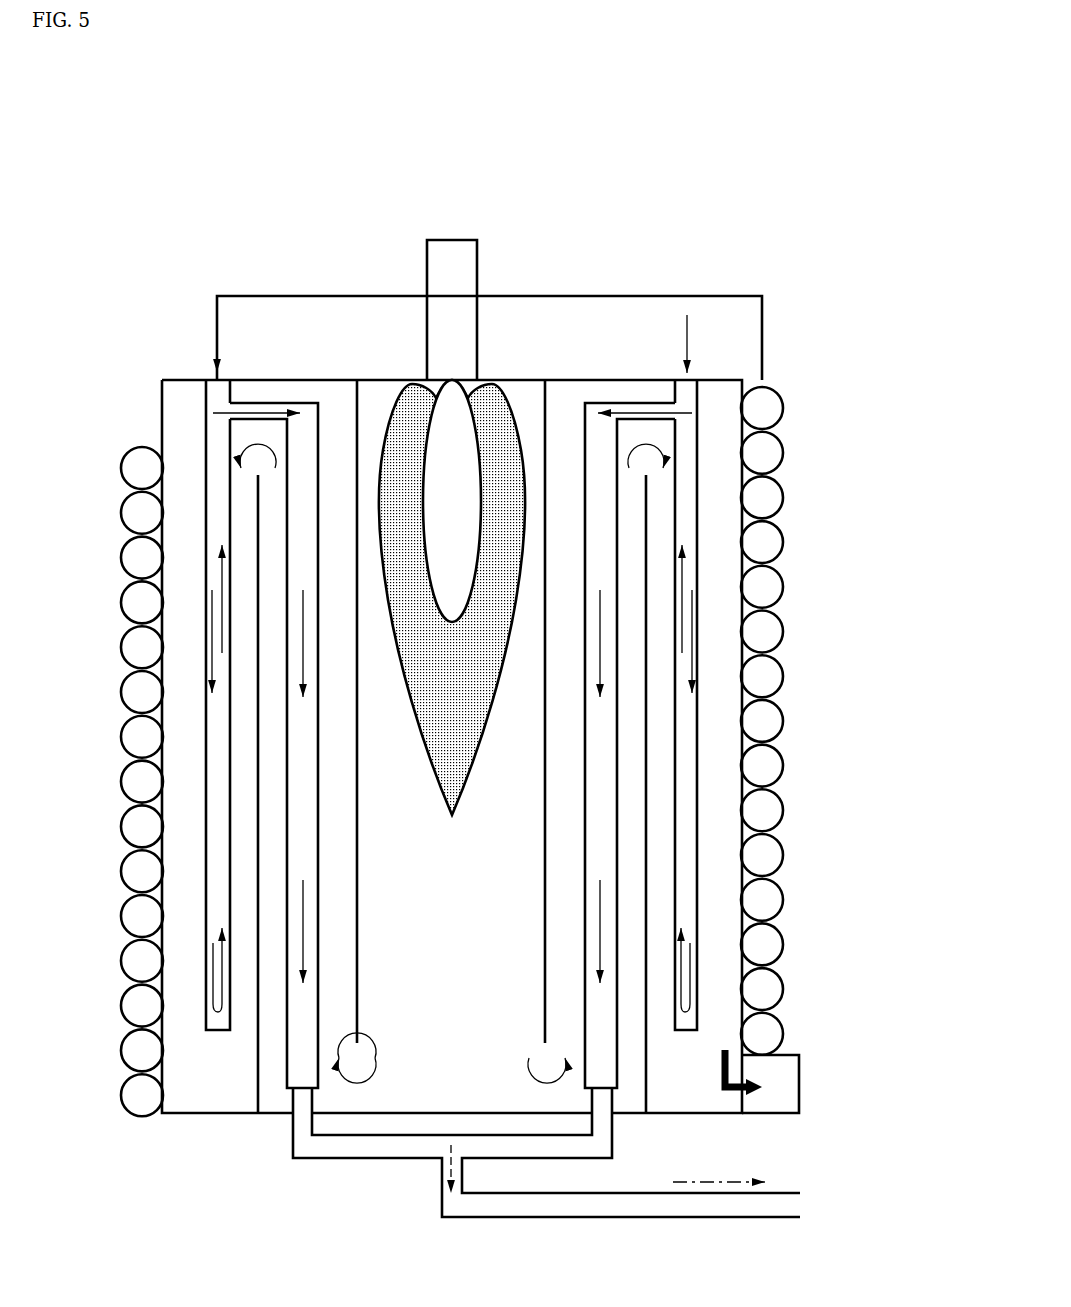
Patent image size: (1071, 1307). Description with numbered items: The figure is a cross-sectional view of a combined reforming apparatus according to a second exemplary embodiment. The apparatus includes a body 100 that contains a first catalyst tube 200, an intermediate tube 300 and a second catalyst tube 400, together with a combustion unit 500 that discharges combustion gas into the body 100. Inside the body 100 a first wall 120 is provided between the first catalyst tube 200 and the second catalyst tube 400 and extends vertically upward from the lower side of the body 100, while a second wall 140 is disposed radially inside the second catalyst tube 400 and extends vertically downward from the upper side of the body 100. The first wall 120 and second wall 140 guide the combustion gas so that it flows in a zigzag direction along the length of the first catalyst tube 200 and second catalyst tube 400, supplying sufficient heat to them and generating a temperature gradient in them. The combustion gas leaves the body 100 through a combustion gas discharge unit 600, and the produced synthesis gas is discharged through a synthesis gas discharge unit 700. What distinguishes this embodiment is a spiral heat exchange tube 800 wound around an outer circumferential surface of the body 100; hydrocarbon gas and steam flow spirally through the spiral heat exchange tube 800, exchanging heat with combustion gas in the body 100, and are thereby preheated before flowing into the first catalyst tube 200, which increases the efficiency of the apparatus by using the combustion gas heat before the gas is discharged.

The body 100 is at (143, 398).
The first wall 120 is at (257, 853).
The second wall 140 is at (357, 643).
The first catalyst tube 200 is at (692, 723).
The intermediate tube 300 is at (233, 423).
The second catalyst tube 400 is at (287, 738).
The combustion unit 500 is at (425, 232).
The combustion gas discharge unit 600 is at (802, 1050).
The synthesis gas discharge unit 700 is at (426, 1208).
The spiral heat exchange tube 800 is at (785, 490).